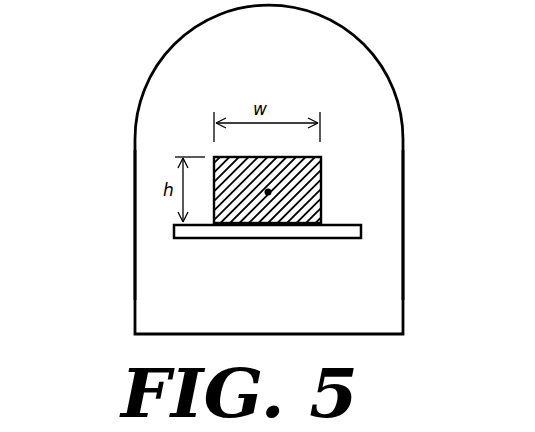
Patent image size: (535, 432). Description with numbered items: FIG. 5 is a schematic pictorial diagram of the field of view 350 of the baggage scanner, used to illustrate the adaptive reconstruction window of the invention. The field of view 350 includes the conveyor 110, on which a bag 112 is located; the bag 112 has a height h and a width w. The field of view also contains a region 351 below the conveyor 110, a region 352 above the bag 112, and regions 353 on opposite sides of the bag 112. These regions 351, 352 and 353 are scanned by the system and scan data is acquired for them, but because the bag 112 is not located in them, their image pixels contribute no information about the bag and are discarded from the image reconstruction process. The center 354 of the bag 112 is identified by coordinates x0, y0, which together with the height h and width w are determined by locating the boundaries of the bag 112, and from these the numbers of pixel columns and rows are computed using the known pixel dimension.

The field of view 350 is at (403, 153).
The region below the conveyor 351 is at (288, 302).
The region above the bag 352 is at (266, 68).
The regions on opposite sides of the bag 353 is at (370, 170).
The center 354 is at (268, 192).
The conveyor 110 is at (174, 228).
The bag 112 is at (321, 192).